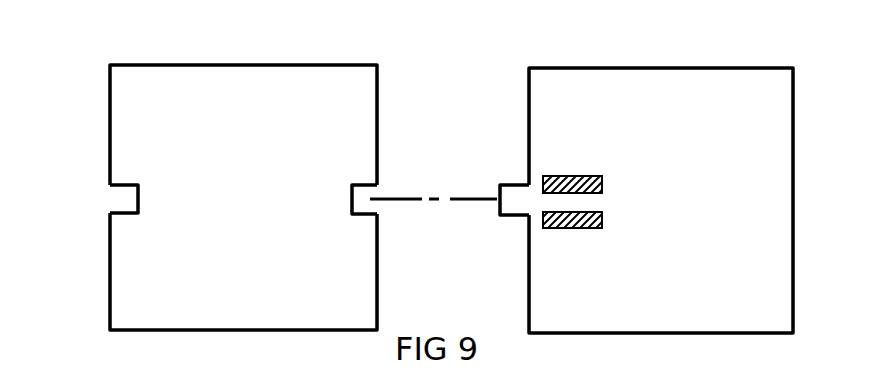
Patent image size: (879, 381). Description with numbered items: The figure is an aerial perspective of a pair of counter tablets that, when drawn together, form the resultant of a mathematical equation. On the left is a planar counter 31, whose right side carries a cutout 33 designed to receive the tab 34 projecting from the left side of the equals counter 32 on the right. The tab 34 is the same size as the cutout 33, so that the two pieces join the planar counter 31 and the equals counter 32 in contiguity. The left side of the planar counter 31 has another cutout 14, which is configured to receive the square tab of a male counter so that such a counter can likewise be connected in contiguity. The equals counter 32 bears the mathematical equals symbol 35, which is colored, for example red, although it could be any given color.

The cutout 14 is at (121, 200).
The planar counter 31 is at (380, 267).
The equals counter 32 is at (578, 66).
The cutout 33 is at (383, 184).
The tab 34 is at (497, 184).
The mathematical equals symbol 35 is at (554, 171).